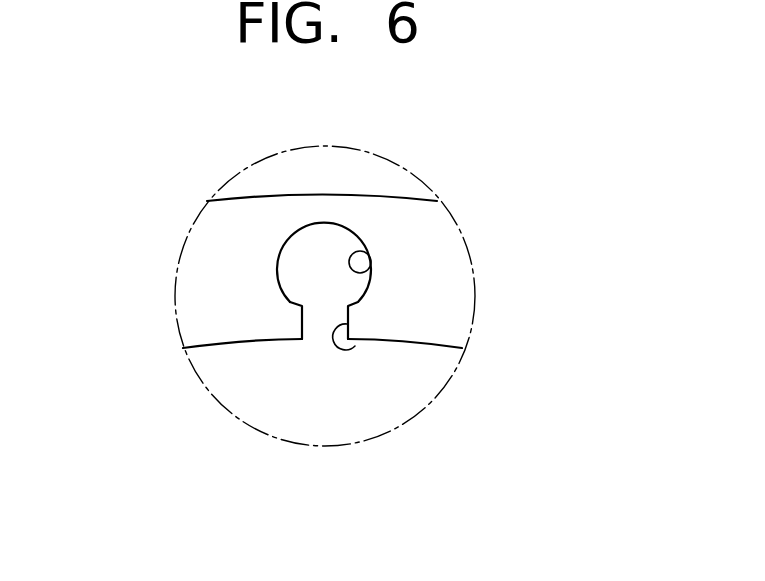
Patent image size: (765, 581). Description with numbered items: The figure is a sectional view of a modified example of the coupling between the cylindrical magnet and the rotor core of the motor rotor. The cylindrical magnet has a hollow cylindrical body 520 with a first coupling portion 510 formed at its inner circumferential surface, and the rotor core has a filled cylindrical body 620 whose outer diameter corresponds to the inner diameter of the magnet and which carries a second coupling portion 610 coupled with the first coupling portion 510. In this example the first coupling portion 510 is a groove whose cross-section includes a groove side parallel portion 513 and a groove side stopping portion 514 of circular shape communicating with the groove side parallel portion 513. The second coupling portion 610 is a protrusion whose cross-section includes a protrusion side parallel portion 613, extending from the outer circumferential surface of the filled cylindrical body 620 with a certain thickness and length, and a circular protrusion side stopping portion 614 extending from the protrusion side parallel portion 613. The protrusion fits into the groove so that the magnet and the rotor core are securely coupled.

The filled cylindrical body 620 is at (278, 414).
The hollow cylindrical body 520 is at (404, 222).
The second coupling portion 610 is at (83, 258).
The protrusion side stopping portion 614 is at (298, 260).
The protrusion side parallel portion 613 is at (315, 322).
The first coupling portion 510 is at (602, 275).
The groove side stopping portion 514 is at (368, 276).
The groove side parallel portion 513 is at (355, 346).